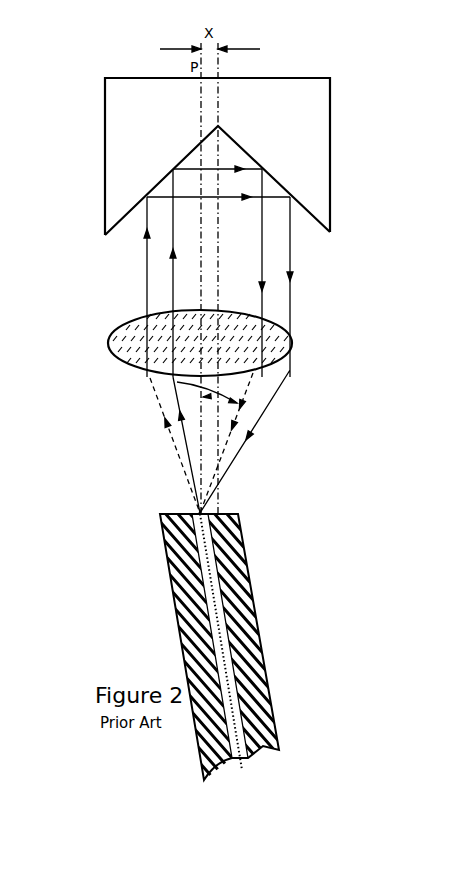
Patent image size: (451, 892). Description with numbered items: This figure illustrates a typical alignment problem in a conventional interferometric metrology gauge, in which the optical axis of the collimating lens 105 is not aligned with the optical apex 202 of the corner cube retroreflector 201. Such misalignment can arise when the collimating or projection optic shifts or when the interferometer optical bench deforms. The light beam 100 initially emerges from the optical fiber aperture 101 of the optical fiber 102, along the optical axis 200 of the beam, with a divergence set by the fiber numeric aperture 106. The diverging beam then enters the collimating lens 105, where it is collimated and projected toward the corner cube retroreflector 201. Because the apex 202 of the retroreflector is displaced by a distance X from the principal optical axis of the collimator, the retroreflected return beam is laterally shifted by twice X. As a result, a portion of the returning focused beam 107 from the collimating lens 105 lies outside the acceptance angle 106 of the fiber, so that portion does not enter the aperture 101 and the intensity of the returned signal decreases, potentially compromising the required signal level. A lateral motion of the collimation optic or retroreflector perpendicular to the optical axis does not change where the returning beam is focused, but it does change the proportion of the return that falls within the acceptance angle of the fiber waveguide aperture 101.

The corner cube retroreflector 201 is at (120, 152).
The optical apex 202 is at (218, 126).
The collimating lens 105 is at (136, 324).
The numeric aperture divergence 106 is at (177, 382).
The returning focused beam 107 is at (284, 428).
The light beam 100 is at (182, 415).
The optical fiber aperture 101 is at (203, 512).
The optical fiber 102 is at (233, 578).
The optical axis 200 is at (245, 760).